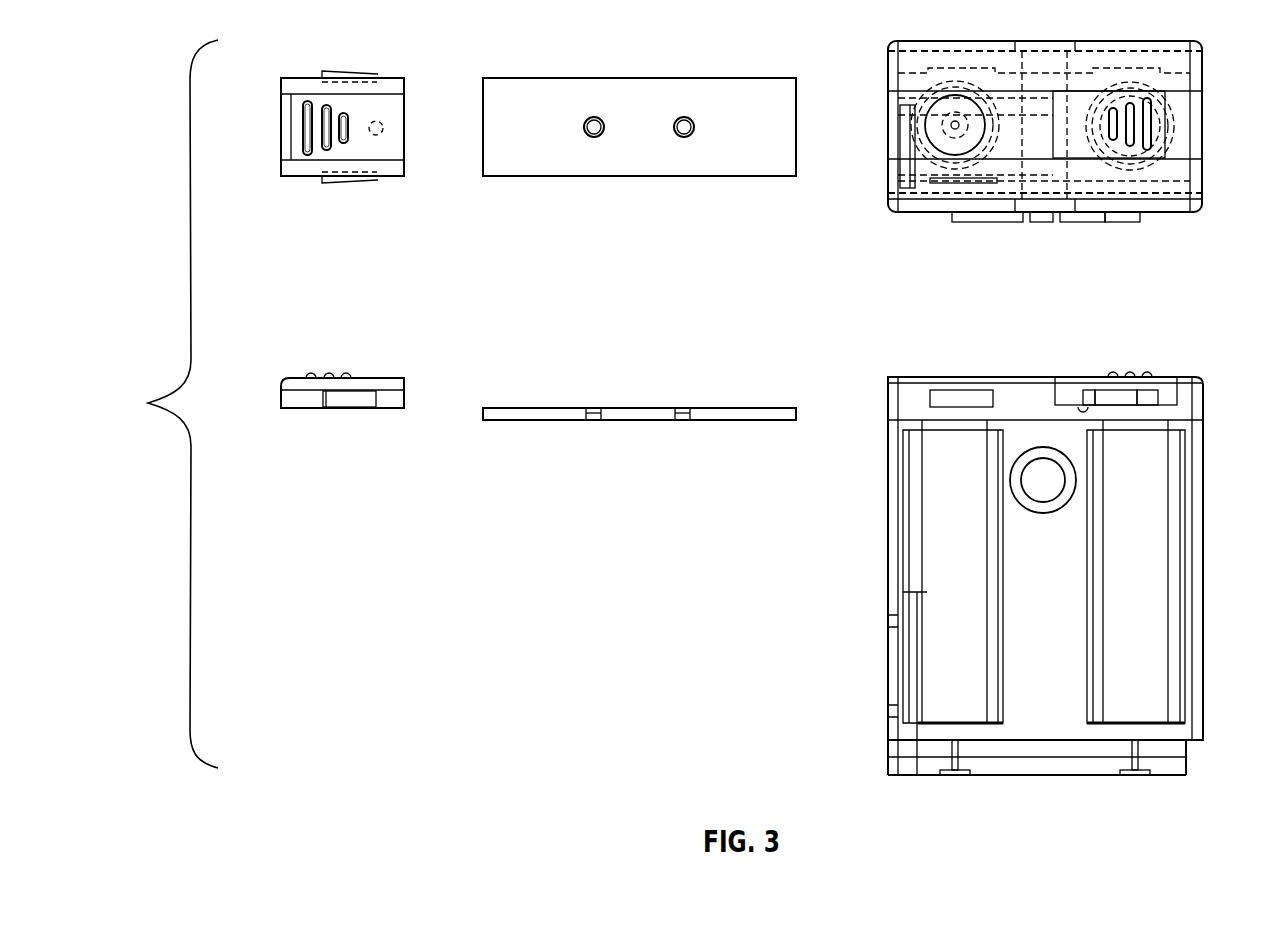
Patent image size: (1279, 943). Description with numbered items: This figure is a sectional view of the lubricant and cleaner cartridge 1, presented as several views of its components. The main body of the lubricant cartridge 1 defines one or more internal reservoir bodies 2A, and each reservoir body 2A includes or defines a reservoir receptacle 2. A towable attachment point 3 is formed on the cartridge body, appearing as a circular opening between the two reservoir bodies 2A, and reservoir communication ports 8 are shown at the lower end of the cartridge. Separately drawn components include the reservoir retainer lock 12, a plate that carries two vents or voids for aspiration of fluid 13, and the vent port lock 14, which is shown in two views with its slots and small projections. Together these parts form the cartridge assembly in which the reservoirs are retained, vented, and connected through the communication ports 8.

The lubricant and cleaner cartridge 1 is at (1078, 594).
The reservoir receptacle 2 is at (908, 119).
The reservoir body 2A is at (970, 582).
The towable attachment point 3 is at (1076, 480).
The reservoir communication ports 8 is at (952, 785).
The reservoir retainer lock 12 is at (639, 260).
The vent or void for aspiration of fluid 13 is at (597, 117).
The vent port lock 14 is at (281, 121).